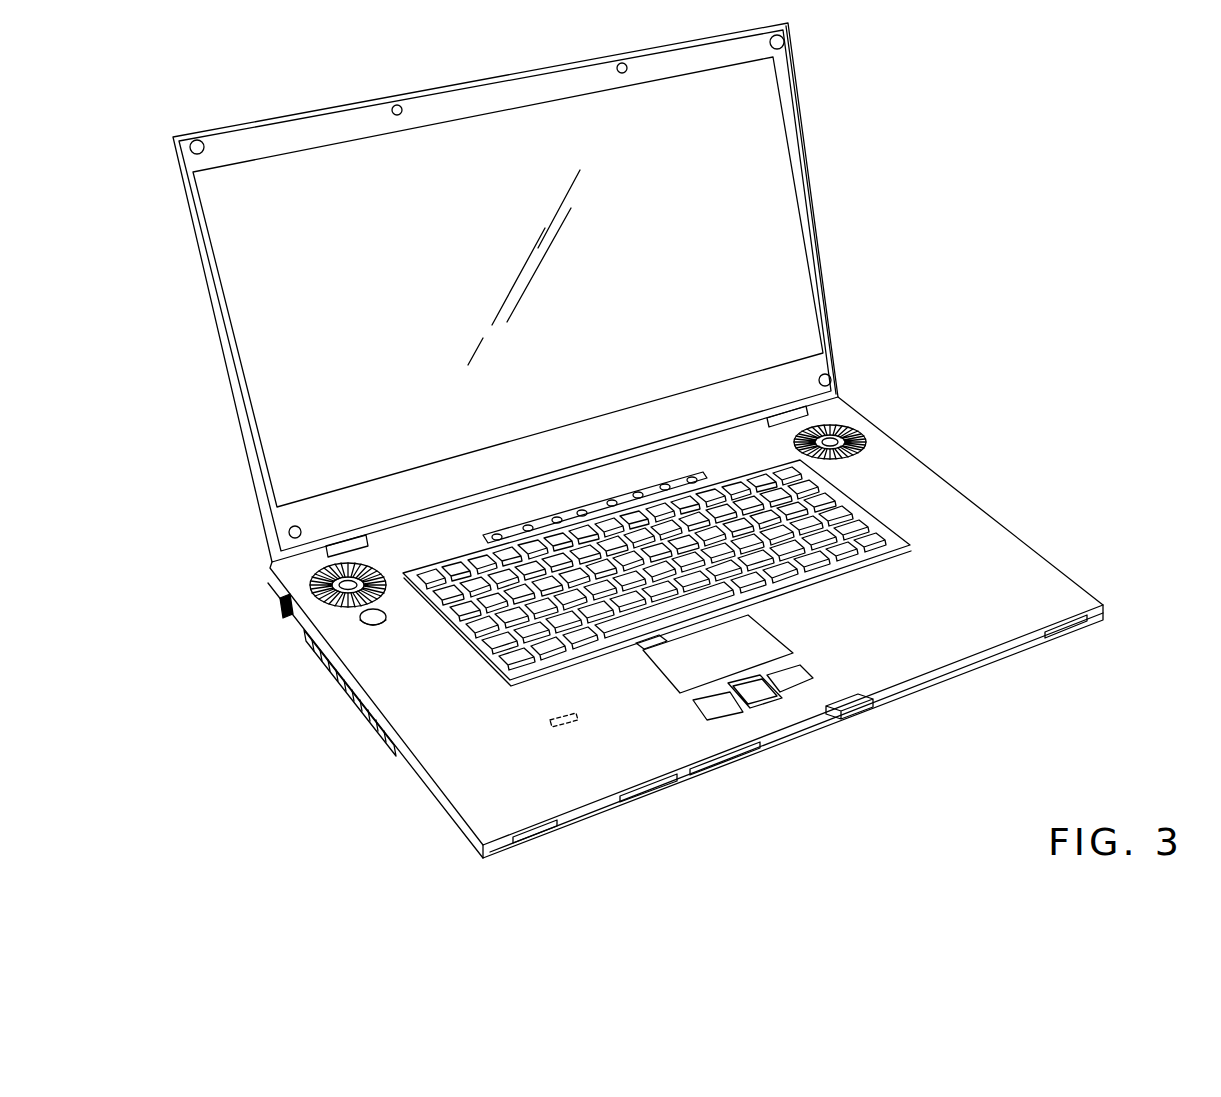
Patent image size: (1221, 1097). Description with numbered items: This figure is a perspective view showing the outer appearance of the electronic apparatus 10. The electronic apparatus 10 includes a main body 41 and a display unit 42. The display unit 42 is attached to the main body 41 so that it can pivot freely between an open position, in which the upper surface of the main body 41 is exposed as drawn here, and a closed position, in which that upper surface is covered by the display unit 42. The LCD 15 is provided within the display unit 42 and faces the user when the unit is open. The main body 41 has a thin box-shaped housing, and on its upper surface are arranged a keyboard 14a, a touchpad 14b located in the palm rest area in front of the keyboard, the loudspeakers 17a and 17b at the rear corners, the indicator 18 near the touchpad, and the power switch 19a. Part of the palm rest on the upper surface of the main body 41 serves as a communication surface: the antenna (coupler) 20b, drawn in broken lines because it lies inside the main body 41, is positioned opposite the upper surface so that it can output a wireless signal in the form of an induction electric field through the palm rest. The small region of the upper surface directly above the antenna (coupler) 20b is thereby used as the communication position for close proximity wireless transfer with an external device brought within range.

The electronic apparatus 10 is at (943, 418).
The LCD 15 is at (315, 168).
The display unit 42 is at (827, 282).
The main body 41 is at (1065, 573).
The loudspeaker 17a is at (311, 583).
The loudspeaker 17b is at (850, 428).
The power switch 19a is at (360, 616).
The keyboard 14a is at (502, 687).
The touchpad 14b is at (688, 667).
The indicator 18 is at (638, 647).
The antenna (coupler) 20b is at (563, 728).